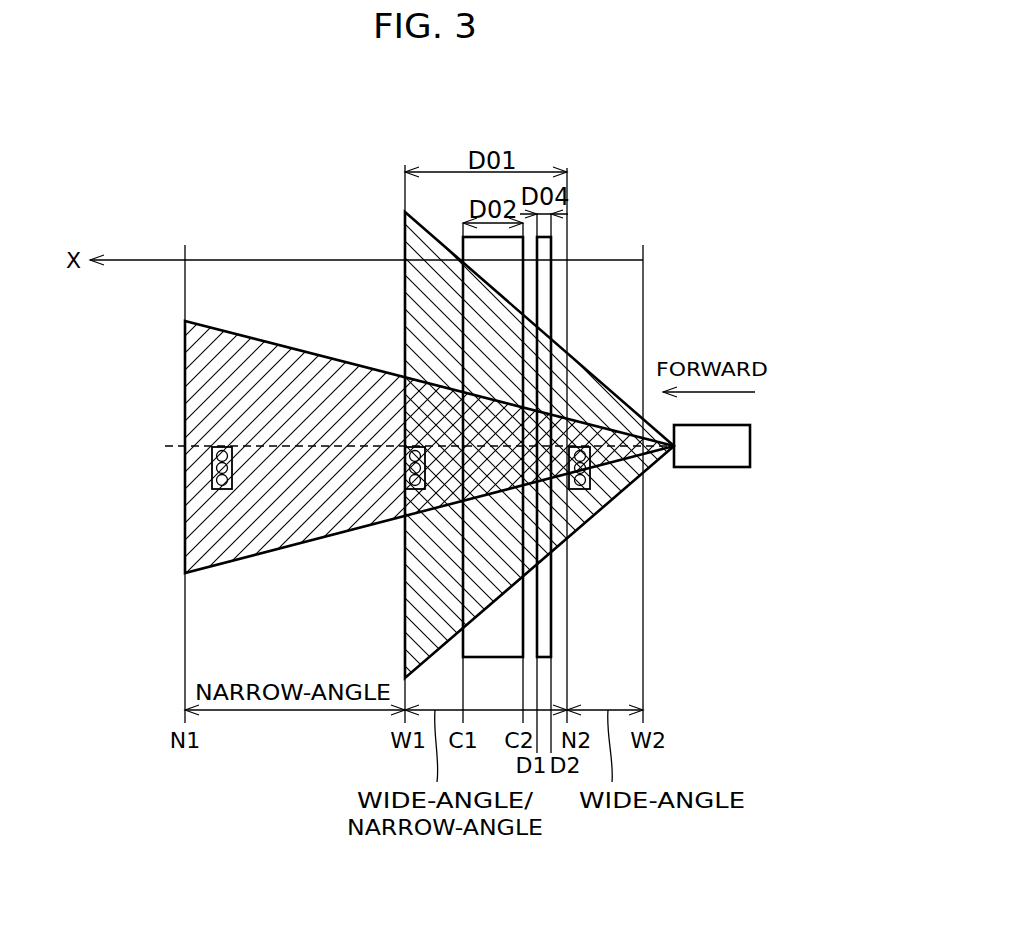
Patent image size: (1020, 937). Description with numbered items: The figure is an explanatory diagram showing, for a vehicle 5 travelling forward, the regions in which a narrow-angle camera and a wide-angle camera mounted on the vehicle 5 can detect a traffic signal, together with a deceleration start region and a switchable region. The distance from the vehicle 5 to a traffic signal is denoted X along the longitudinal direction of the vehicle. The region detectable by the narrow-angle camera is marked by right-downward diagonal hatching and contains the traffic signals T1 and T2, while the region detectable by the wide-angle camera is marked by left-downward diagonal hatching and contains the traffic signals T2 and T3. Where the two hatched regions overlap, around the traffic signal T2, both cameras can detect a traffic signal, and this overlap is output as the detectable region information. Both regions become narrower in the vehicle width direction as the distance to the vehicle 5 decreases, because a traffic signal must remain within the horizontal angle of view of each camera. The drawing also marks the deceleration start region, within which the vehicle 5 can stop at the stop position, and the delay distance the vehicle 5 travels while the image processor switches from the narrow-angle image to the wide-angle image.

The vehicle 5 is at (688, 467).
The traffic signal T1 is at (229, 489).
The traffic signal T2 is at (405, 480).
The traffic signal T3 is at (580, 489).